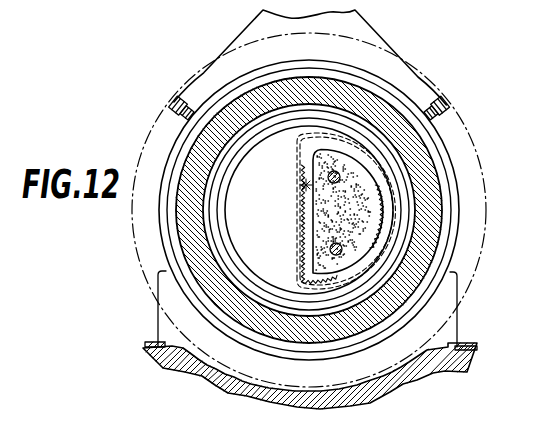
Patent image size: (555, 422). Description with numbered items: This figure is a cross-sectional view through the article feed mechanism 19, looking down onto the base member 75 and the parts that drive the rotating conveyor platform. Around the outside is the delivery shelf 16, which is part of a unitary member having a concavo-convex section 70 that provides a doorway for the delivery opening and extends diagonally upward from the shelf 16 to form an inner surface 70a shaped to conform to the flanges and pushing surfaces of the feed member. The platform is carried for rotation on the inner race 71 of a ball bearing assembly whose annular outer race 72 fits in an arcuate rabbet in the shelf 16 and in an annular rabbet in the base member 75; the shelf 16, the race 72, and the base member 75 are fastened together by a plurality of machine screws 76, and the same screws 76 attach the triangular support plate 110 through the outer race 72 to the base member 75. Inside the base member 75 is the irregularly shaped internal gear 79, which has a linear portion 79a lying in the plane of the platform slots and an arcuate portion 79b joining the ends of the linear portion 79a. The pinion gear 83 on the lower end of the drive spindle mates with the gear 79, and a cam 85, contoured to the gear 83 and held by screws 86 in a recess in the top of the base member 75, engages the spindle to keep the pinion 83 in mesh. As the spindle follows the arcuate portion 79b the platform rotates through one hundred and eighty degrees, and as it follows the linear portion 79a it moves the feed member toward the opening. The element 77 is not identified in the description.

The triangular support plate 110 is at (378, 45).
The machine screws 76 is at (173, 100).
The article feed mechanism 19 is at (493, 119).
The annular outer race 72 is at (170, 152).
The inner race 71 is at (180, 205).
The base member 75 is at (206, 230).
The gasket outline 77 is at (331, 270).
The internal gear 79 is at (296, 196).
The linear portion 79a is at (301, 227).
The arcuate portion 79b is at (379, 236).
The pinion gear 83 is at (309, 185).
The cam 85 is at (362, 192).
The screws 86 is at (340, 242).
The delivery shelf 16 is at (452, 331).
The concavo-convex section 70 is at (208, 378).
The inner surface 70a is at (385, 372).